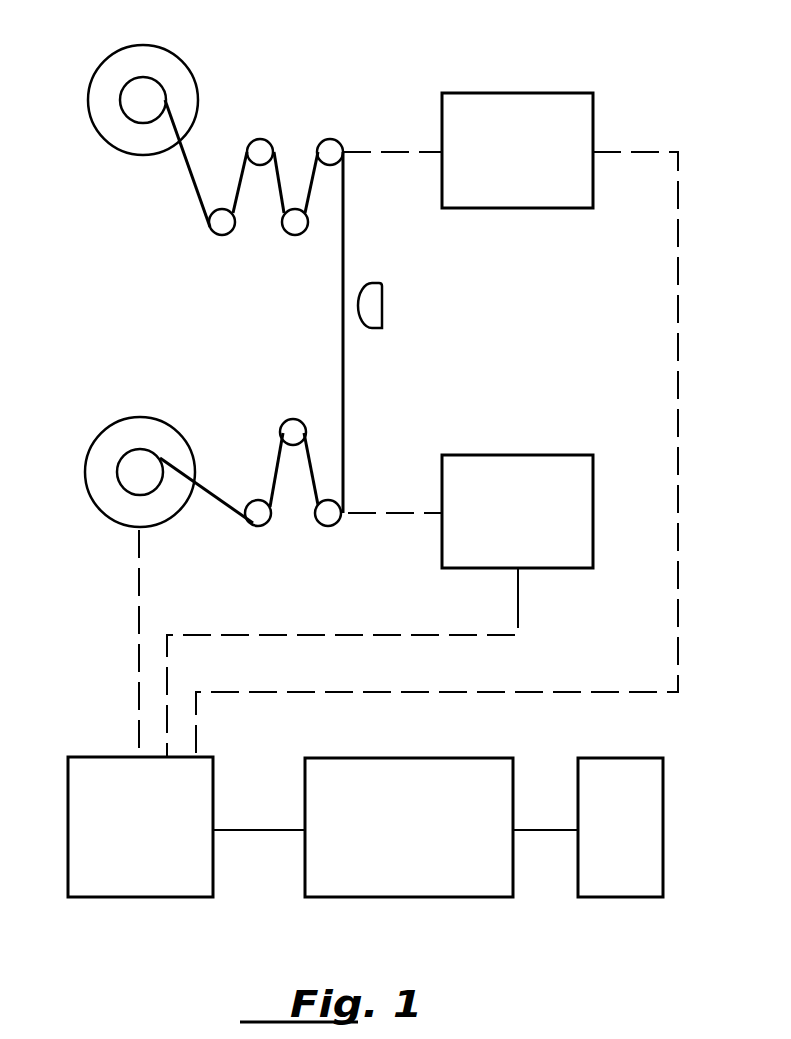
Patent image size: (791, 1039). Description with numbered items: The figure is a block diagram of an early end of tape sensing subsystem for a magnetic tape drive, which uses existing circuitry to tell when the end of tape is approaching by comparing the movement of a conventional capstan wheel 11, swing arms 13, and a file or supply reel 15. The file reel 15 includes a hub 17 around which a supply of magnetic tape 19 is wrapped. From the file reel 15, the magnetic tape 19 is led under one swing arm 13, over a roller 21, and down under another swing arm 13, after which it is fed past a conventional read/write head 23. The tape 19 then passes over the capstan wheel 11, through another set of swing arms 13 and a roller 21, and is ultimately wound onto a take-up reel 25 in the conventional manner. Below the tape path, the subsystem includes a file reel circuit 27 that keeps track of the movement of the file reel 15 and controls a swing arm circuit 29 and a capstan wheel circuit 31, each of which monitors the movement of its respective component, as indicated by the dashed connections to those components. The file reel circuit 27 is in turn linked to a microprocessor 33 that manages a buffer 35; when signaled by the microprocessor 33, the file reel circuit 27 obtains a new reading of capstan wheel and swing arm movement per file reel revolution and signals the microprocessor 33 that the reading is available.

The capstan wheel 11 is at (330, 150).
The swing arms 13 is at (223, 227).
The file reel 15 is at (107, 478).
The hub 17 is at (132, 460).
The magnetic tape 19 is at (217, 503).
The roller 21 is at (258, 148).
The read/write head 23 is at (373, 308).
The take-up reel 25 is at (155, 63).
The file reel circuit 27 is at (85, 832).
The swing arm circuit 29 is at (563, 472).
The capstan wheel circuit 31 is at (573, 130).
The microprocessor 33 is at (325, 868).
The buffer 35 is at (607, 868).